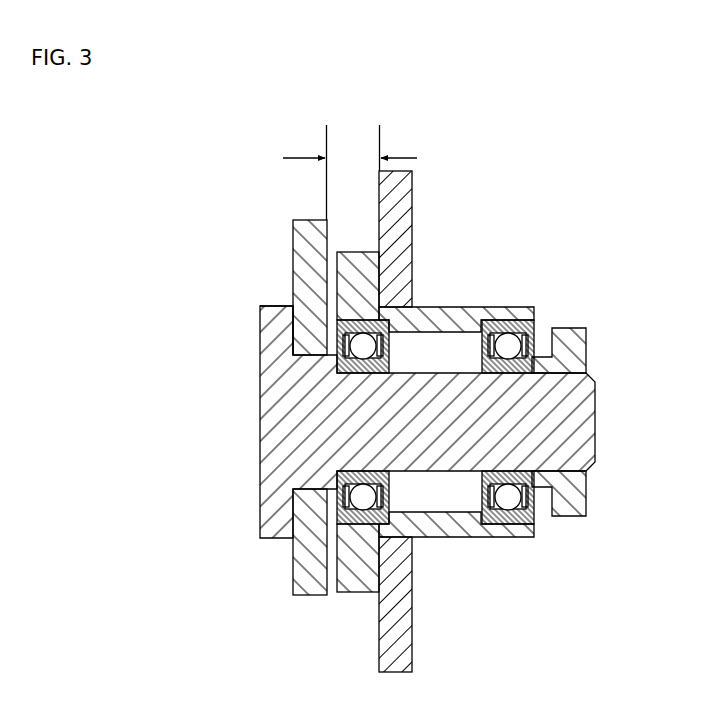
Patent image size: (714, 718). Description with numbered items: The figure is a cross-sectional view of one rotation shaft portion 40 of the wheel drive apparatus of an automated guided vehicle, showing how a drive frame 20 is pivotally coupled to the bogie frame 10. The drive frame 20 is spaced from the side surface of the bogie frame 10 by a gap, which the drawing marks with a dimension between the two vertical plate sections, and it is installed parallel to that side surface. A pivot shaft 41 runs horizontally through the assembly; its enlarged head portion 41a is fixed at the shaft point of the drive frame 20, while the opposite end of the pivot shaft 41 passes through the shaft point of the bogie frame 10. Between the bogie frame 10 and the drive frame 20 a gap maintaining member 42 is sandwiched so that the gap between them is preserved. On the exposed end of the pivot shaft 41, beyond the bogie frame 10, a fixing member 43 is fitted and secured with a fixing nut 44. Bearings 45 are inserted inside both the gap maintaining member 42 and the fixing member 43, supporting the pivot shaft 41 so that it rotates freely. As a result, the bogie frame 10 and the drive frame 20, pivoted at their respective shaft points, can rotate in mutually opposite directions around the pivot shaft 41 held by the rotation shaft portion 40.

The bogie frame 10 is at (413, 200).
The drive frame 20 is at (307, 230).
The rotation shaft portion 40 is at (179, 165).
The pivot shaft 41 is at (258, 426).
The head portion 41a is at (262, 337).
The gap maintaining member 42 is at (340, 596).
The fixing member 43 is at (453, 528).
The fixing nut 44 is at (586, 330).
The bearing 45 is at (381, 320).